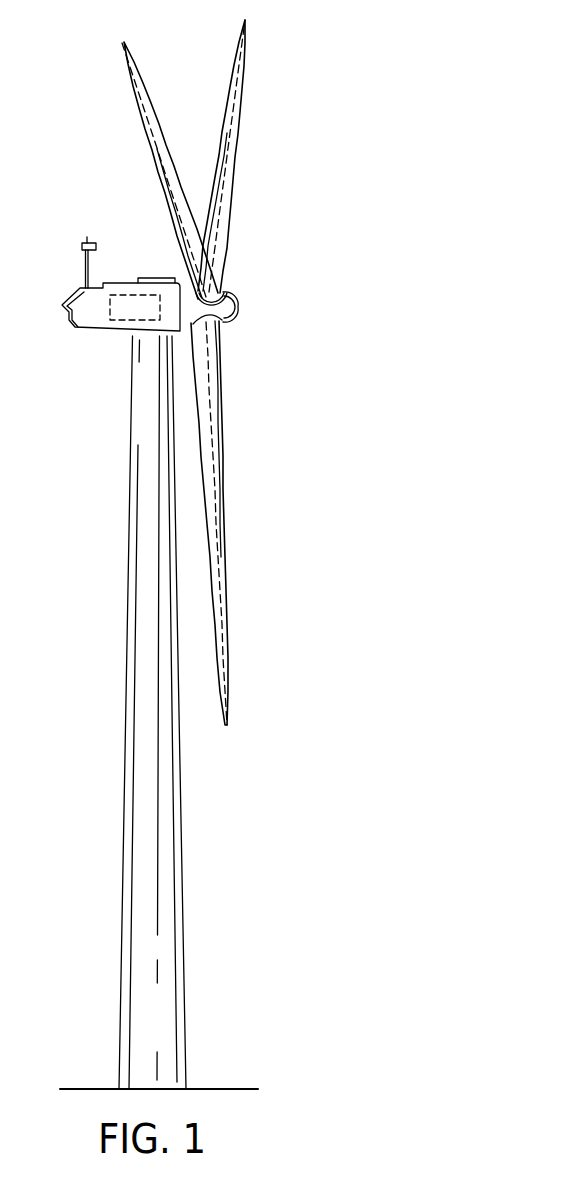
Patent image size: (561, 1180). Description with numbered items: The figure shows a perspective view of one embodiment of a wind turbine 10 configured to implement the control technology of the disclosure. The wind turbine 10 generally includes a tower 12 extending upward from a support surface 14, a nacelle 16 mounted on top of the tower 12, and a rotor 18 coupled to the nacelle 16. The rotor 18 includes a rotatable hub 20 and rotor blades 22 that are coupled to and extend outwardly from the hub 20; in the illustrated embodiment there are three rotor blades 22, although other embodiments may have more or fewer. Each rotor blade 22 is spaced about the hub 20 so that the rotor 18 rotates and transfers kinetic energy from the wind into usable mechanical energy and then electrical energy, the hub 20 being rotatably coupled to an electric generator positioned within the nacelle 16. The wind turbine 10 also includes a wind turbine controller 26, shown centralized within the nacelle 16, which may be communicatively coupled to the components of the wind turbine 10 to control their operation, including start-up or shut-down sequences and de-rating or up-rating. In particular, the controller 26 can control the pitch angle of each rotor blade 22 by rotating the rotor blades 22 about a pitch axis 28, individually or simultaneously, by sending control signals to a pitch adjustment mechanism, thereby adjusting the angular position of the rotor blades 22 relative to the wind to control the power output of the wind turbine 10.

The wind turbine 10 is at (355, 113).
The tower 12 is at (166, 812).
The support surface 14 is at (88, 1088).
The nacelle 16 is at (97, 318).
The rotor 18 is at (252, 280).
The rotatable hub 20 is at (238, 303).
The rotor blade 22 is at (149, 96).
The wind turbine controller 26 is at (127, 293).
The pitch axis 28 is at (163, 169).